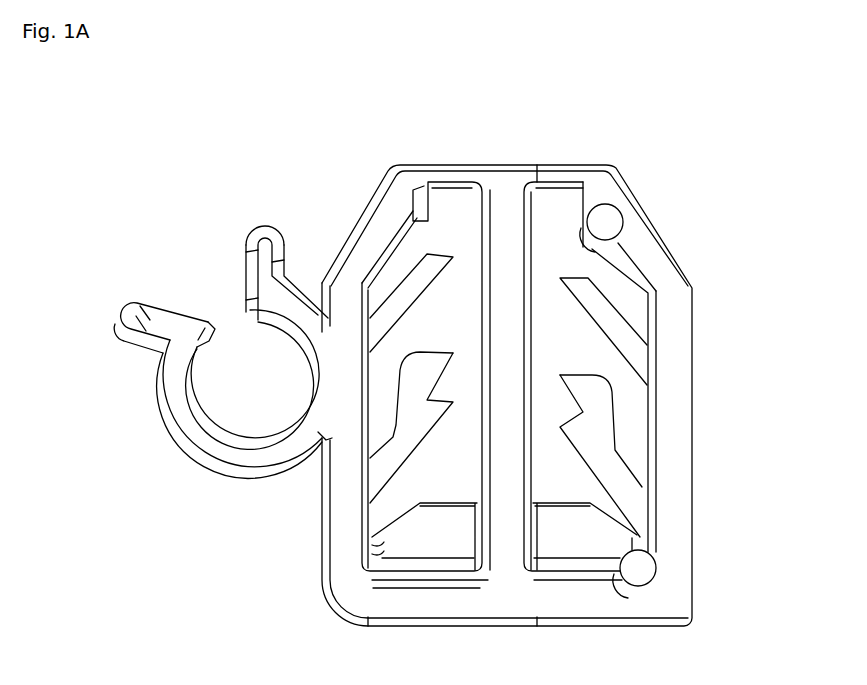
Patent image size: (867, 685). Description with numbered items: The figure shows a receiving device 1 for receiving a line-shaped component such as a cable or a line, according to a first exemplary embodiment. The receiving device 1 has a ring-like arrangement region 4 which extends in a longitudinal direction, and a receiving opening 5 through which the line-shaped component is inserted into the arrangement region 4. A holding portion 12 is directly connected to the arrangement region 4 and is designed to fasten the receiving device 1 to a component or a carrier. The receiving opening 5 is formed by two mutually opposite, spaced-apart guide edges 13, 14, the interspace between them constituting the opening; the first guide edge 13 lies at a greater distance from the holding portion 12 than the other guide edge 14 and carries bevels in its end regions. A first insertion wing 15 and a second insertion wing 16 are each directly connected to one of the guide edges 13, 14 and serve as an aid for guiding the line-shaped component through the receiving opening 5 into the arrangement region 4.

The receiving device 1 is at (75, 128).
The arrangement region 4 is at (233, 456).
The receiving opening 5 is at (209, 296).
The holding portion 12 is at (673, 404).
The first guide edge 13 is at (215, 327).
The guide edge 14 is at (247, 313).
The first insertion wing 15 is at (128, 328).
The second insertion wing 16 is at (265, 228).